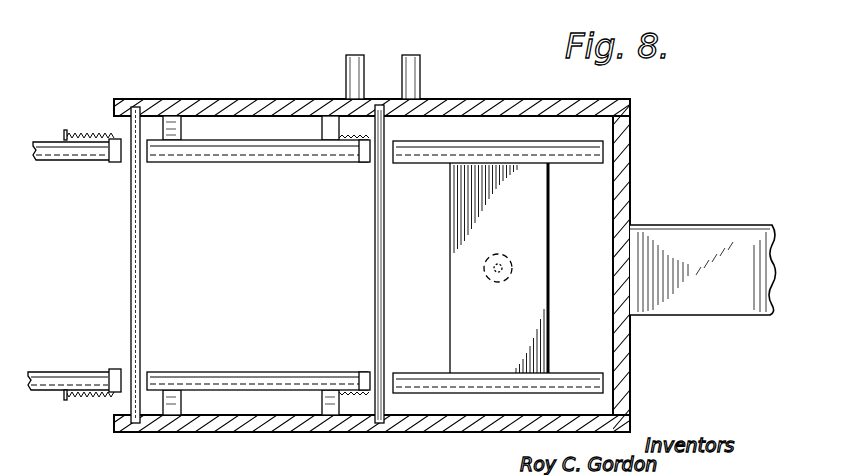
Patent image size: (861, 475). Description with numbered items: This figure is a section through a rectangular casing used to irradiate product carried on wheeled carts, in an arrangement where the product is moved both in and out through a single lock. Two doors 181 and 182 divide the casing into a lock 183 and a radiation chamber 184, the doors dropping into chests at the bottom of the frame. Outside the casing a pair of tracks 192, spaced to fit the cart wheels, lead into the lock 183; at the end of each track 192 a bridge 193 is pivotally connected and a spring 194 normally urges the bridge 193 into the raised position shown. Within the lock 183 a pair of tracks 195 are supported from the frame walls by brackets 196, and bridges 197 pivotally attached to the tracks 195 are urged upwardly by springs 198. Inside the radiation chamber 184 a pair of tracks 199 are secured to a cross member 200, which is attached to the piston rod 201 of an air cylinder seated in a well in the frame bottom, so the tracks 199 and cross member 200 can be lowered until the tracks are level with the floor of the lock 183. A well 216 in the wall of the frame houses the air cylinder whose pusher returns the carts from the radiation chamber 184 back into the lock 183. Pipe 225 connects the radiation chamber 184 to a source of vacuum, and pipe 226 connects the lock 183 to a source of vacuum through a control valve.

The door 181 is at (131, 271).
The door 182 is at (349, 316).
The lock 183 is at (369, 265).
The radiation chamber 184 is at (415, 240).
The tracks 192 is at (72, 155).
The bridge 193 is at (118, 163).
The spring 194 is at (92, 135).
The tracks 195 is at (268, 163).
The brackets 196 is at (185, 125).
The bridges 197 is at (362, 165).
The springs 198 is at (338, 131).
The tracks 199 is at (582, 165).
The cross member 200 is at (499, 268).
The piston rod 201 is at (484, 276).
The well 216 is at (692, 232).
The pipe 225 is at (420, 84).
The pipe 226 is at (346, 70).